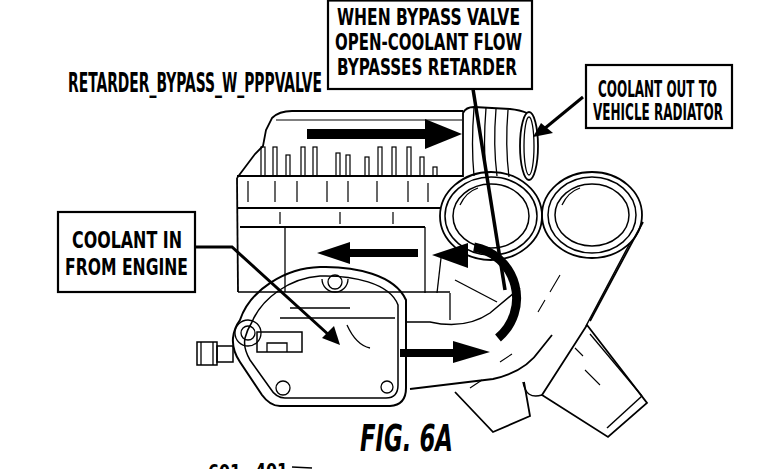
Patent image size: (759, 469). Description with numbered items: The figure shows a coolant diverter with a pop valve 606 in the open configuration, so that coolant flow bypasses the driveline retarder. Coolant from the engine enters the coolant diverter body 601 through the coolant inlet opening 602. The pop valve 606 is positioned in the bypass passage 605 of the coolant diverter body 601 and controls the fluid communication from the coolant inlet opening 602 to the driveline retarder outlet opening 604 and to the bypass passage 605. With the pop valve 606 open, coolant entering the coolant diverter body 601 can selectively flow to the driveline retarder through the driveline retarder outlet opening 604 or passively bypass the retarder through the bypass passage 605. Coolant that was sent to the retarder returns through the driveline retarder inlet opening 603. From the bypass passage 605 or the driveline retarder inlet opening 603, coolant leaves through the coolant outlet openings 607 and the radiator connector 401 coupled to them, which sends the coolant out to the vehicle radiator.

The radiator connector 401 is at (326, 163).
The coolant diverter body 601 is at (550, 100).
The coolant inlet opening 602 is at (317, 352).
The driveline retarder inlet opening 603 is at (508, 212).
The driveline retarder outlet opening 604 is at (600, 218).
The bypass passage 605 is at (523, 305).
The pop valve 606 is at (603, 392).
The coolant outlet openings 607 is at (313, 218).